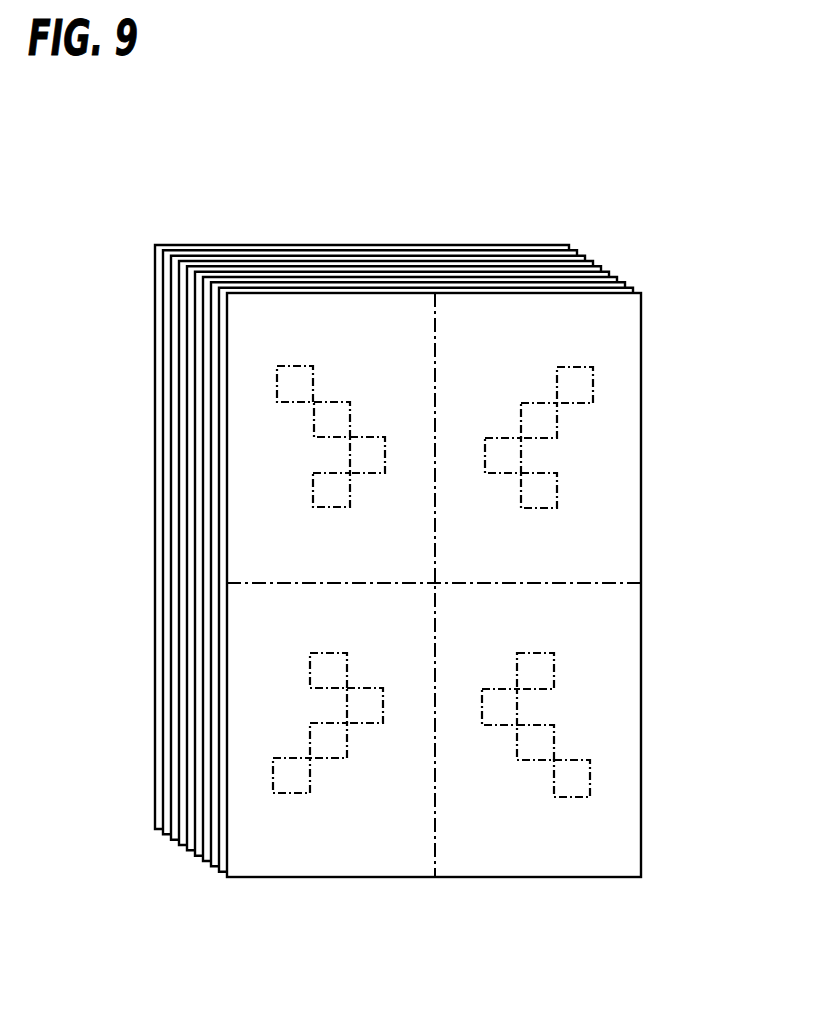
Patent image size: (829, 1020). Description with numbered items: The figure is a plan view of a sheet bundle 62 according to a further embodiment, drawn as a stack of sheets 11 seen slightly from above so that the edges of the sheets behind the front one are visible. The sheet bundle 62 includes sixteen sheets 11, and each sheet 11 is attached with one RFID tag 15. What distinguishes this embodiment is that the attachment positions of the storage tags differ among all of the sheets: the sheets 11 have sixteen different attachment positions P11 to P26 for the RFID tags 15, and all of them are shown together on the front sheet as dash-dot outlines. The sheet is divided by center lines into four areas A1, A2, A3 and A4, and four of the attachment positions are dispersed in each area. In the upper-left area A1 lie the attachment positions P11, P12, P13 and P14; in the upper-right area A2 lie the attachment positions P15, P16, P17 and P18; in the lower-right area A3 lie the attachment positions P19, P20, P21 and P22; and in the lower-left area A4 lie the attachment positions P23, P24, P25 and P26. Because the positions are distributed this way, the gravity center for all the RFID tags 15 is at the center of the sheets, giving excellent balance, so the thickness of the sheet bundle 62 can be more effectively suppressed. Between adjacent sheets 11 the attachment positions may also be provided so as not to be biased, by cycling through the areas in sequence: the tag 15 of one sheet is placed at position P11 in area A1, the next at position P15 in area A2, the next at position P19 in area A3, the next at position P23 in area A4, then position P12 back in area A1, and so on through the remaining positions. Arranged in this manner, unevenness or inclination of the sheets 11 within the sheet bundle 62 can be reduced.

The sheet bundle 62 is at (398, 142).
The sheet 11 is at (643, 329).
The RFID tag 15 is at (433, 583).
The area A1 is at (328, 302).
The area A2 is at (508, 305).
The area A3 is at (522, 865).
The area A4 is at (328, 868).
The attachment position P11 is at (312, 351).
The attachment position P12 is at (353, 387).
The attachment position P13 is at (391, 422).
The attachment position P14 is at (337, 522).
The attachment position P15 is at (577, 352).
The attachment position P16 is at (545, 388).
The attachment position P17 is at (510, 423).
The attachment position P18 is at (545, 523).
The attachment position P19 is at (580, 812).
The attachment position P20 is at (539, 775).
The attachment position P21 is at (502, 740).
The attachment position P22 is at (542, 638).
The attachment position P23 is at (297, 808).
The attachment position P24 is at (337, 773).
The attachment position P25 is at (373, 738).
The attachment position P26 is at (335, 638).